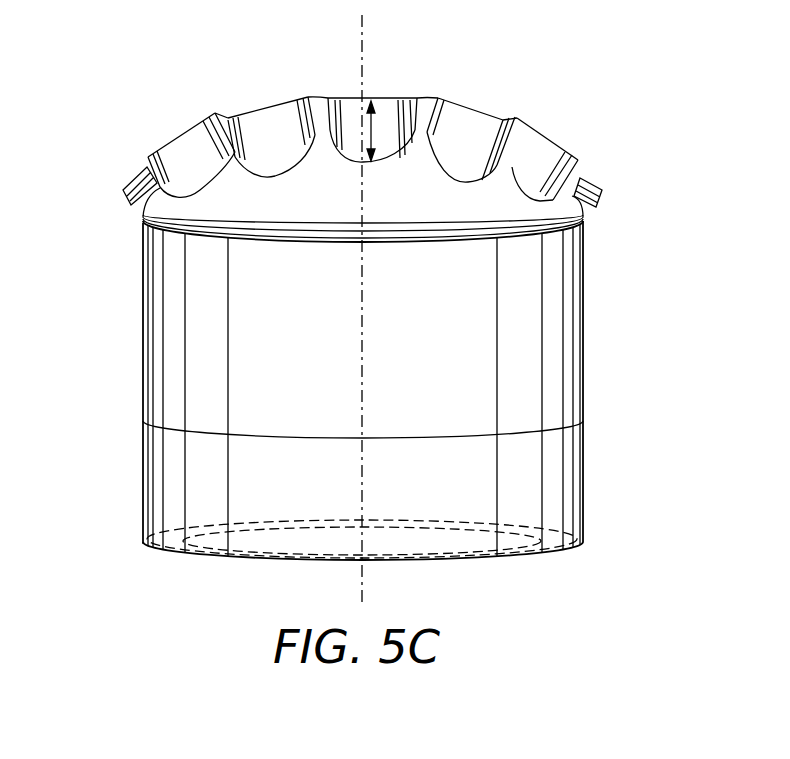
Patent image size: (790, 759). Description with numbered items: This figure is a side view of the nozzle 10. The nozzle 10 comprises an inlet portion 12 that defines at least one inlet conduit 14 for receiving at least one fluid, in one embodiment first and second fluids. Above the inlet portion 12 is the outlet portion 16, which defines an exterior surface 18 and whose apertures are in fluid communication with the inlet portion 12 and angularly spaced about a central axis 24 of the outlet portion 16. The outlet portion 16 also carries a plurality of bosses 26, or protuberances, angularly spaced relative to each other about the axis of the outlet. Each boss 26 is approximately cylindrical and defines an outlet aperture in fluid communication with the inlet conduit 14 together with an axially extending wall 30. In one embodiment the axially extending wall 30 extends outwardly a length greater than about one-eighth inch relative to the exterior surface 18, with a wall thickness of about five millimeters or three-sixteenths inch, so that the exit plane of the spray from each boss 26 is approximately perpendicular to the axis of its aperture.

The nozzle 10 is at (423, 80).
The inlet portion 12 is at (152, 486).
The inlet conduit 14 is at (281, 548).
The outlet portion 16 is at (150, 321).
The exterior surface 18 is at (572, 343).
The central axis 24 is at (365, 343).
The bosses 26 is at (196, 138).
The axially extending wall 30 is at (288, 130).